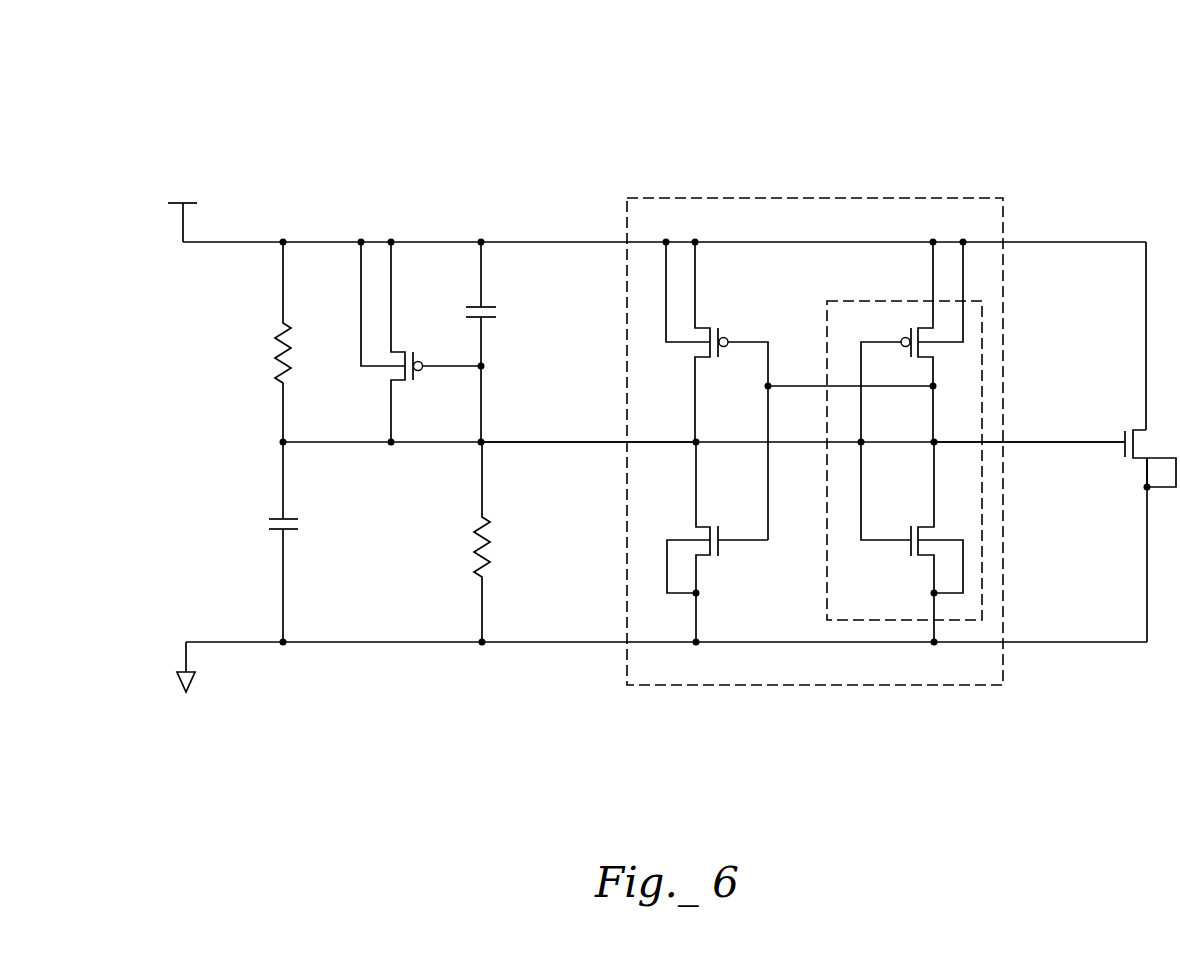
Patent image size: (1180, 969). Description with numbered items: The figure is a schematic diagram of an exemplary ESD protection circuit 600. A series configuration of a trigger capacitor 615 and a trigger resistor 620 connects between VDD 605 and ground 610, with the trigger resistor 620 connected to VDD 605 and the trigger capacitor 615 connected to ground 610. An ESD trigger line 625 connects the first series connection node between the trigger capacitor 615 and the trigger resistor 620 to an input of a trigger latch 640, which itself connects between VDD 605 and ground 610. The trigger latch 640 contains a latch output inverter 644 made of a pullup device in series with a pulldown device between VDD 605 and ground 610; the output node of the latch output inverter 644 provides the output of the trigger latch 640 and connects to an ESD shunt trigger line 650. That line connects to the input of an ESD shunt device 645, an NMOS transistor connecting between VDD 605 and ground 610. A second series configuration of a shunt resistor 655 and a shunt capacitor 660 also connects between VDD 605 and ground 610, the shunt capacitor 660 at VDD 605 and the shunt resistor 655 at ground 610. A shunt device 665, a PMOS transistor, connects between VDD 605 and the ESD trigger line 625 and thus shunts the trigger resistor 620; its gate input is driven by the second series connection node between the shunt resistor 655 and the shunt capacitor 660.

The ESD protection circuit 600 is at (1004, 72).
The VDD 605 is at (190, 203).
The ground 610 is at (186, 668).
The trigger capacitor 615 is at (272, 521).
The trigger resistor 620 is at (280, 341).
The ESD trigger line 625 is at (552, 441).
The trigger latch 640 is at (910, 198).
The latch output inverter 644 is at (858, 301).
The ESD shunt device 645 is at (1133, 430).
The ESD shunt trigger line 650 is at (1066, 442).
The shunt resistor 655 is at (478, 530).
The shunt capacitor 660 is at (496, 317).
The shunt device 665 is at (399, 382).